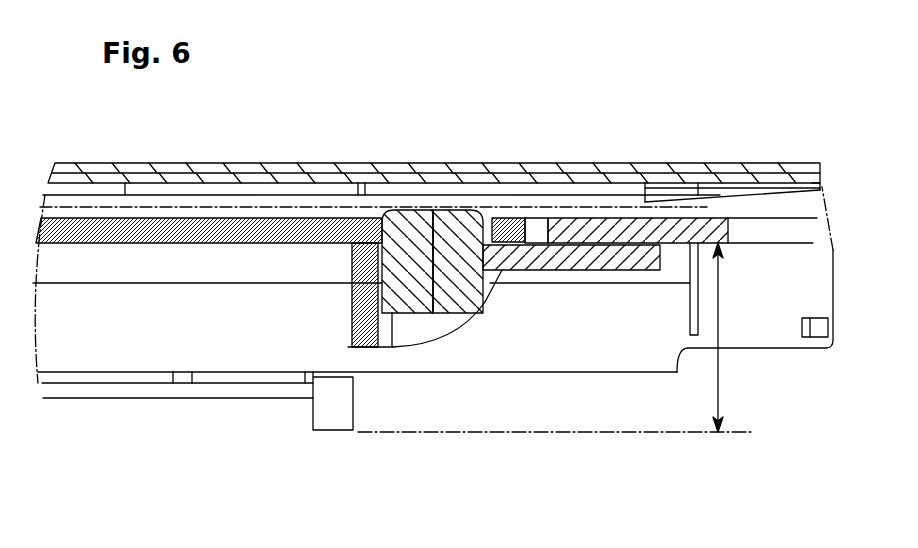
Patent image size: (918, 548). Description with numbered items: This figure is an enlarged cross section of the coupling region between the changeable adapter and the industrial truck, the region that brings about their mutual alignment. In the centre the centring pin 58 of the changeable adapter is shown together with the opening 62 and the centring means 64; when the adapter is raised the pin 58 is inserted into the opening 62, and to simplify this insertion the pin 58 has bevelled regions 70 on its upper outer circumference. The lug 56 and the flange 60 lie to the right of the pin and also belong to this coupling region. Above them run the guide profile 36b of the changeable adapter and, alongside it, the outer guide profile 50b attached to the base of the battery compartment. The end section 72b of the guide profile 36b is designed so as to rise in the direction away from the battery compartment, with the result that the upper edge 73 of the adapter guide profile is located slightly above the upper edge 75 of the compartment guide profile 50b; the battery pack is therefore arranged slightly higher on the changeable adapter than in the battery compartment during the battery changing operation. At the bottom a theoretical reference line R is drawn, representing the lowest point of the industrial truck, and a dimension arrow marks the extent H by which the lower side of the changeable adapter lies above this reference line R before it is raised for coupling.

The outer guide profile 50b is at (205, 207).
The upper edge of the guide profiles 50a, 50b 75 is at (287, 195).
The bevelled region 70 is at (385, 212).
The opening 62 is at (489, 218).
The lug 56 is at (626, 225).
The end section of the guide profile 36b 72b is at (722, 198).
The upper edge of the guide profiles 36a, 36b 73 is at (818, 186).
The guide profile 36b is at (815, 207).
The flange 60 is at (581, 254).
The centring pin 58 is at (465, 300).
The centring means 64 is at (405, 328).
The extent h H is at (720, 322).
The reference line R is at (672, 433).